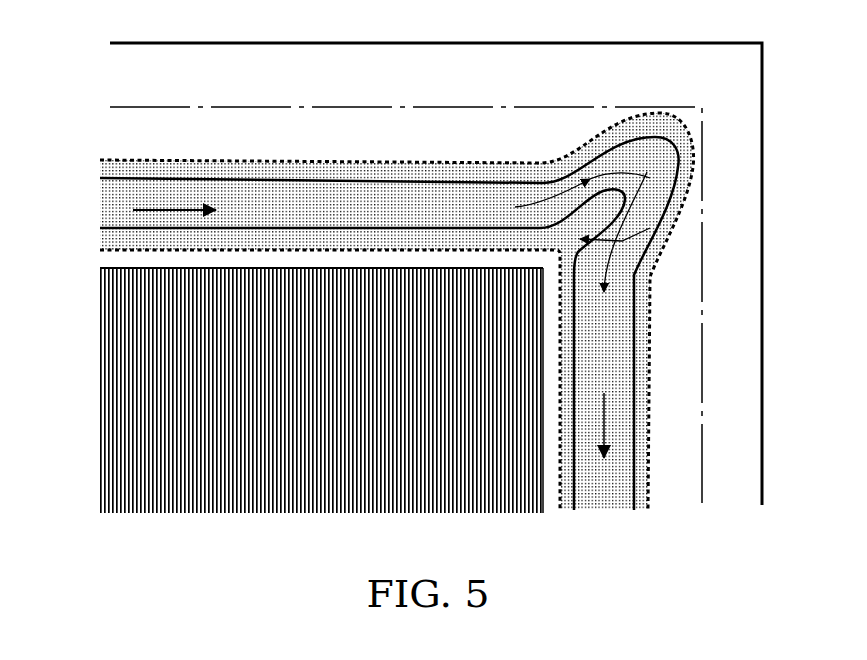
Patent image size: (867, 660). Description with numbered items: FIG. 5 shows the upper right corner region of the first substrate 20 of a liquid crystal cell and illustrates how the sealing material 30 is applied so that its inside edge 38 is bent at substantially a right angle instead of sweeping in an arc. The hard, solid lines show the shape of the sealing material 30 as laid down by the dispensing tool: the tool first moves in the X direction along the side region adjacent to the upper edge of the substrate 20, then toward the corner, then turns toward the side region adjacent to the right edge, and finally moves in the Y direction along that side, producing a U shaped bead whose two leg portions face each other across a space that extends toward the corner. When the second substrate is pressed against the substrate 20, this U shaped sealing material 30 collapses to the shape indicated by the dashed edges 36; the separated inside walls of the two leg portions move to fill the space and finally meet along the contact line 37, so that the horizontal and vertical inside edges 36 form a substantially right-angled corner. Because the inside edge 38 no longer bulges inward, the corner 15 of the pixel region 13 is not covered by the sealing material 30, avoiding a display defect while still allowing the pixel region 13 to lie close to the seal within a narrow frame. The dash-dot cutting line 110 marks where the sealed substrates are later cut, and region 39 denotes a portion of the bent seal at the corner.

The substrate 20 is at (333, 42).
The cutting line 110 is at (266, 107).
The pixel region 13 is at (311, 402).
The sealing material 30 is at (103, 215).
The edge of the sealing material 36 is at (125, 160).
The contact line 37 is at (650, 228).
The inside edge of the sealing material 38 is at (608, 305).
The third flow portion 39 is at (650, 178).
The corner of the pixel region 15 is at (545, 270).